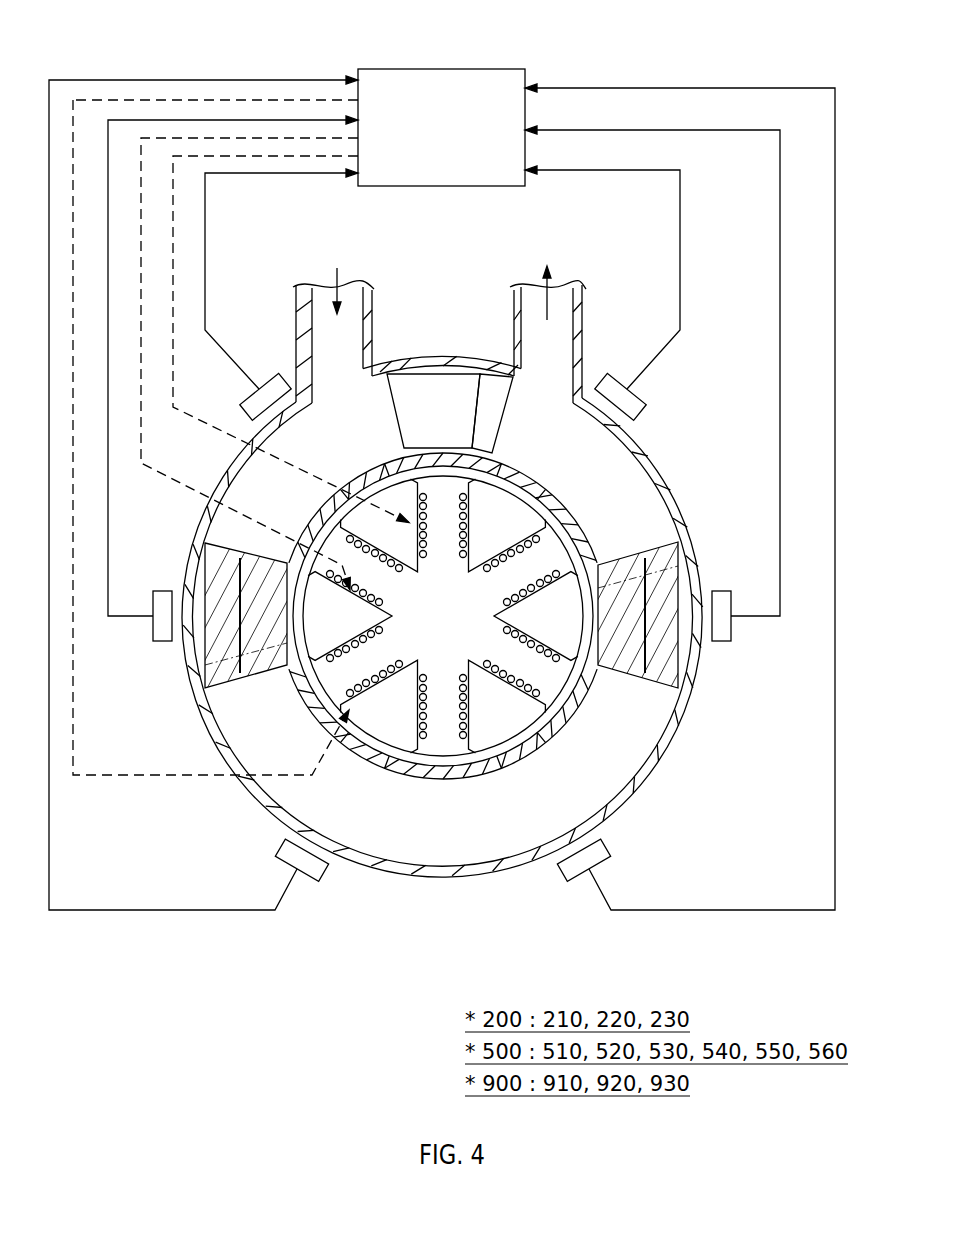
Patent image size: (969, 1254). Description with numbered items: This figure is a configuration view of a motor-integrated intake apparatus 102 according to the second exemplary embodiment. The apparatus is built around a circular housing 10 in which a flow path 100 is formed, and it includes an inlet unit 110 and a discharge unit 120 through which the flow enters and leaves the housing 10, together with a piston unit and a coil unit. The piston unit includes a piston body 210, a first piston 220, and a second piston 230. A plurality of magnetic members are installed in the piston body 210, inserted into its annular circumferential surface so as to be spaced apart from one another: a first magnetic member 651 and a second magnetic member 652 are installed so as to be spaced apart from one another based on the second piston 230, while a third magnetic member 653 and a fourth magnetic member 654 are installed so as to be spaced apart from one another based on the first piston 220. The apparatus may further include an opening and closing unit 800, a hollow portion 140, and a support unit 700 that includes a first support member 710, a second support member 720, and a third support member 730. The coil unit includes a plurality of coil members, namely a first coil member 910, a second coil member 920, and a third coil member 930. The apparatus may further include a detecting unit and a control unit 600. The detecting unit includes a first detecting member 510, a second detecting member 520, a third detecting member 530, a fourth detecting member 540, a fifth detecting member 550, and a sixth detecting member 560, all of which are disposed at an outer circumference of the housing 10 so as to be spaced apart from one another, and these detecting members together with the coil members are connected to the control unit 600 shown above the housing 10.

The motor-integrated intake apparatus 102 is at (786, 32).
The control unit 600 is at (443, 69).
The housing 10 is at (458, 678).
The flow path 100 is at (596, 758).
The inlet unit 110 is at (298, 328).
The discharge unit 120 is at (584, 305).
The opening and closing unit 800 is at (442, 356).
The first support member 710 is at (515, 468).
The piston body 210 is at (425, 762).
The second support member 720 is at (578, 538).
The third support member 730 is at (558, 688).
The first magnetic member 651 is at (370, 478).
The second magnetic member 652 is at (380, 763).
The third magnetic member 653 is at (514, 763).
The fourth magnetic member 654 is at (548, 490).
The support unit 700 is at (446, 750).
The hollow portion 140 is at (498, 714).
The first piston 220 is at (682, 668).
The second piston 230 is at (203, 680).
The first detecting member 510 is at (250, 405).
The second detecting member 520 is at (160, 632).
The third detecting member 530 is at (306, 878).
The fourth detecting member 540 is at (607, 848).
The fifth detecting member 550 is at (728, 627).
The sixth detecting member 560 is at (612, 386).
The first coil member 910 is at (406, 490).
The second coil member 920 is at (352, 745).
The third coil member 930 is at (340, 600).